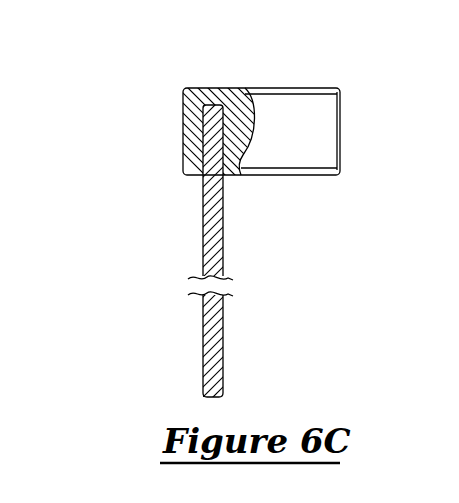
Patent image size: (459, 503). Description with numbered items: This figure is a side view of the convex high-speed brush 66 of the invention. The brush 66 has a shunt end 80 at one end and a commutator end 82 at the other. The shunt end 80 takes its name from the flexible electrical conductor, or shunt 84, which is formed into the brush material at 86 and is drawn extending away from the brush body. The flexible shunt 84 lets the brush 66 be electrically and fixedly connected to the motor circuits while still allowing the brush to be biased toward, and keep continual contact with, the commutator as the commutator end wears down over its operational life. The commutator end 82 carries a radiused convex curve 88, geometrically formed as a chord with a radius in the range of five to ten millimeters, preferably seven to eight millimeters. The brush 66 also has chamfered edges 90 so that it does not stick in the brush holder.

The shunt end 80 is at (258, 215).
The commutator end 82 is at (331, 86).
The shunt 84 is at (203, 223).
The brush material 86 is at (183, 112).
The convex curve 88 is at (342, 130).
The chamfered edges 90 is at (273, 88).
The high-speed brush 66 is at (315, 176).